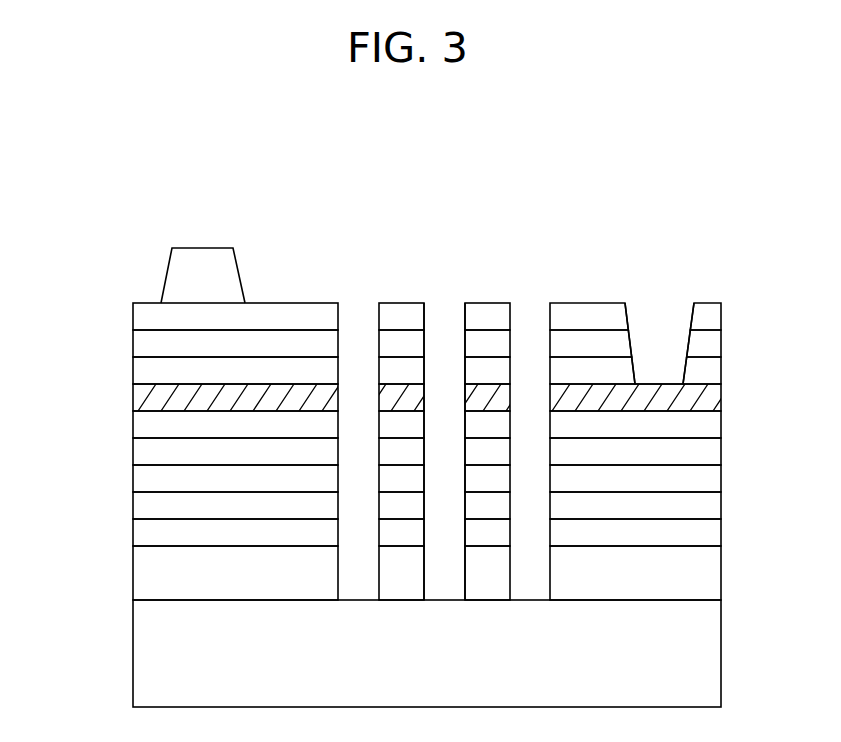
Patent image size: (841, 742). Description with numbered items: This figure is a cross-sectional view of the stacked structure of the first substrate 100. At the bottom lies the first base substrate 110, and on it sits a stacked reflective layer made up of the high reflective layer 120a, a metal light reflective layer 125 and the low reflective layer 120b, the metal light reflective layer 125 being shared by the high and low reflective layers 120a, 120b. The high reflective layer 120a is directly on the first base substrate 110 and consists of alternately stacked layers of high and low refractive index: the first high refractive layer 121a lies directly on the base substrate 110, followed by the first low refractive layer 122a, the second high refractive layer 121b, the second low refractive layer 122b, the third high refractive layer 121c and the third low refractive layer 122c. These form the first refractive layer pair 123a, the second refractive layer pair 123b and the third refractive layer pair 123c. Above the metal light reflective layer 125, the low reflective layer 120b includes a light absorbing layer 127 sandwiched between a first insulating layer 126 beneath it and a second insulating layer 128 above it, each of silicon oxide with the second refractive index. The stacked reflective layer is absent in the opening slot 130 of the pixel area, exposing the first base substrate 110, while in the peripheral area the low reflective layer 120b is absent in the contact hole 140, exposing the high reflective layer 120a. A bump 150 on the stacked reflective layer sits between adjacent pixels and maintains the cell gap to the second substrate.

The first substrate 100 is at (323, 180).
The first base substrate 110 is at (133, 663).
The high reflective layer 120a is at (723, 600).
The low reflective layer 120b is at (723, 411).
The first high refractive layer 121a is at (133, 573).
The second high refractive layer 121b is at (133, 506).
The third high refractive layer 121c is at (133, 452).
The first low refractive layer 122a is at (133, 533).
The second low refractive layer 122b is at (133, 479).
The third low refractive layer 122c is at (133, 425).
The first refractive layer pair 123a is at (55, 525).
The second refractive layer pair 123b is at (55, 470).
The third refractive layer pair 123c is at (55, 412).
The metal light reflective layer 125 is at (133, 397).
The first insulating layer 126 is at (133, 370).
The light absorbing layer 127 is at (133, 343).
The second insulating layer 128 is at (133, 316).
The opening slot 130 is at (448, 343).
The contact hole 140 is at (666, 340).
The bump 150 is at (176, 262).